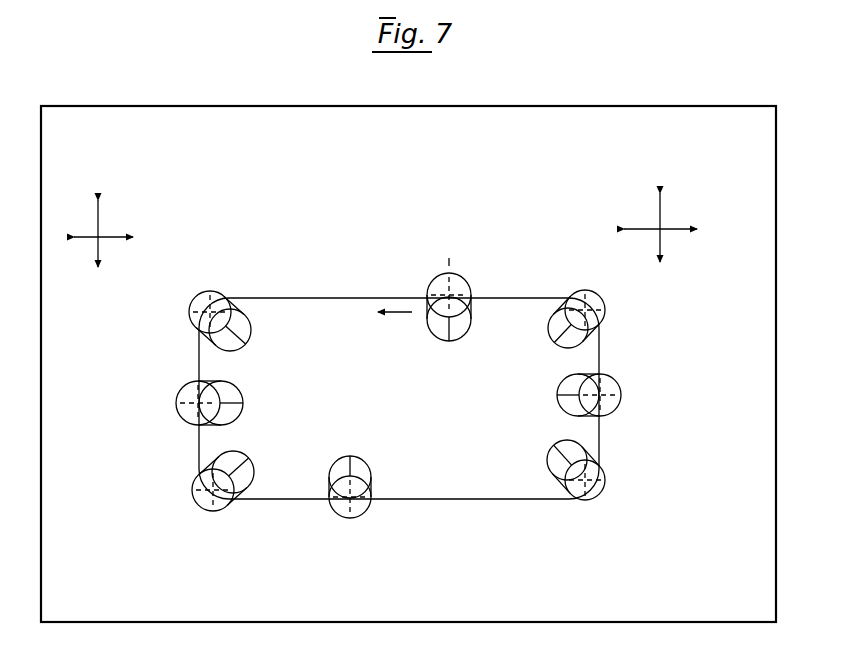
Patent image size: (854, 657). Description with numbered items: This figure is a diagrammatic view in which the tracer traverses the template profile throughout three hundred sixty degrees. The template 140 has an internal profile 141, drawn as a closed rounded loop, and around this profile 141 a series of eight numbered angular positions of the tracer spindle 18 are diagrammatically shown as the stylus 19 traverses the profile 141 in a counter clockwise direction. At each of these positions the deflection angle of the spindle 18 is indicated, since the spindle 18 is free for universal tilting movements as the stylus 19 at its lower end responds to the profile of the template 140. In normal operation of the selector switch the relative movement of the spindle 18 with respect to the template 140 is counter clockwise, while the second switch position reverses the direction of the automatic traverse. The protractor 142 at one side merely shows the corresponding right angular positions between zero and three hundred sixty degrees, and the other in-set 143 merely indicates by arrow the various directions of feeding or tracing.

The spindle 18 is at (468, 280).
The stylus 19 is at (465, 336).
The template 140 is at (207, 611).
The internal profile 141 is at (433, 495).
The protractor 142 is at (152, 205).
The in-set 143 is at (616, 204).